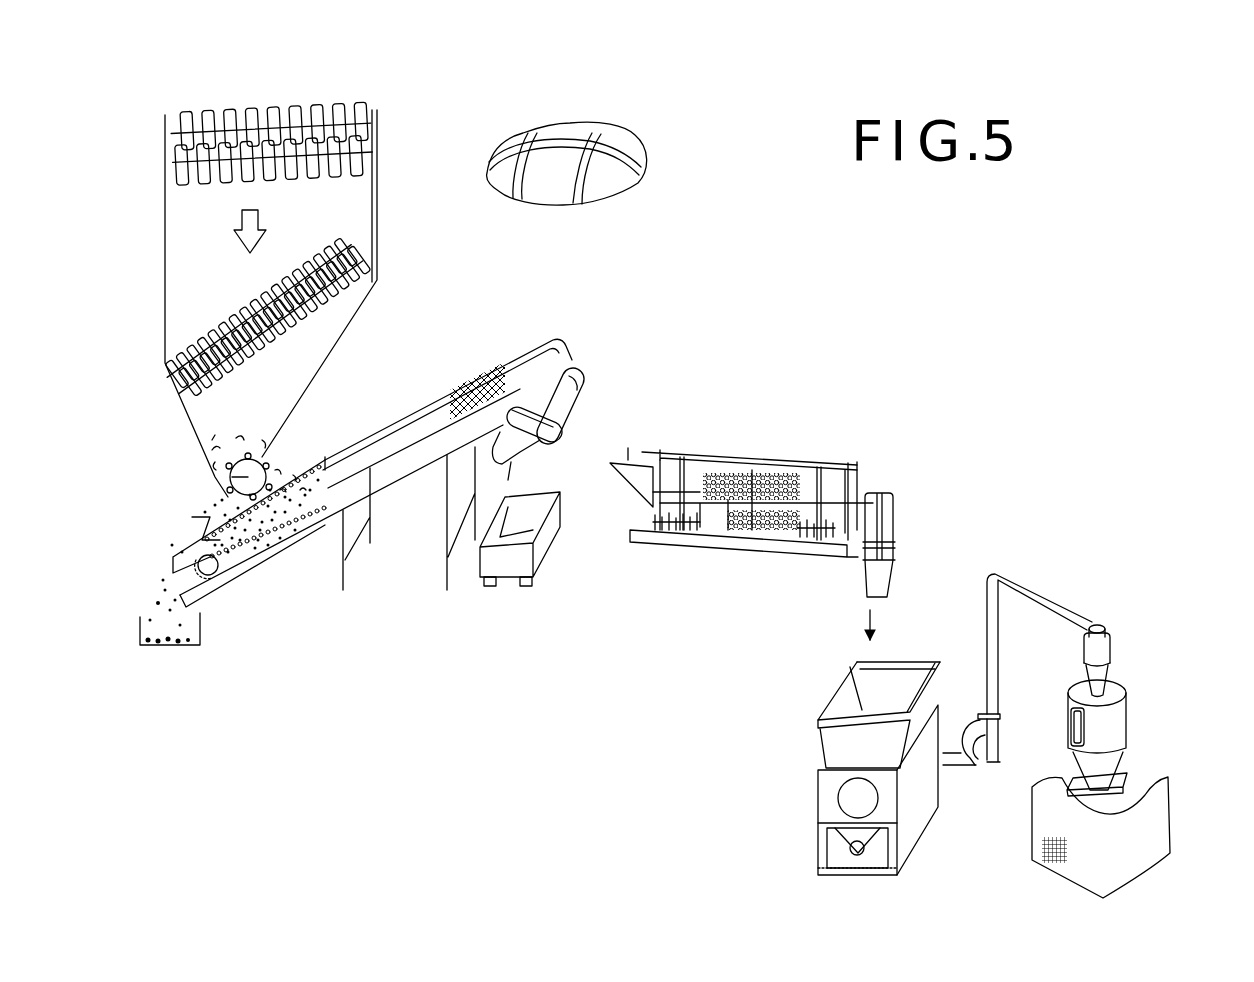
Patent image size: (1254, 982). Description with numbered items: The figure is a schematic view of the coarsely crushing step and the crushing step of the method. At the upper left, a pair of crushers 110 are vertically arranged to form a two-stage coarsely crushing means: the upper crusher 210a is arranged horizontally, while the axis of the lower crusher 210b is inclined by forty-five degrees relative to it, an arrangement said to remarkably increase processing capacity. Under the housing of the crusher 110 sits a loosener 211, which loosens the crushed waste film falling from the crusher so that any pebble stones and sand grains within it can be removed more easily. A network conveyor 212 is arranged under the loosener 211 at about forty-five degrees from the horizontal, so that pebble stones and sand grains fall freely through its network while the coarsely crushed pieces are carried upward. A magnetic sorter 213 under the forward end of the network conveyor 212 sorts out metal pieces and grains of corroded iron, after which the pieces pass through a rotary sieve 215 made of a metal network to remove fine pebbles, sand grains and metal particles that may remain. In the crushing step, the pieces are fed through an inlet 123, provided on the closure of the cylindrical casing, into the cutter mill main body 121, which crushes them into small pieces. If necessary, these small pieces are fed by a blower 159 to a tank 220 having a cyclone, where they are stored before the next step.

The crusher 110 is at (462, 187).
The upper crusher 210a is at (273, 108).
The lower crusher 210b is at (333, 297).
The loosener 211 is at (215, 484).
The network conveyor 212 is at (420, 420).
The magnetic sorter 213 is at (582, 387).
The rotary sieve 215 is at (773, 472).
The inlet 123 is at (897, 687).
The cutter mill main body 121 is at (810, 806).
The blower 159 is at (1000, 740).
The tank 220 is at (1176, 812).